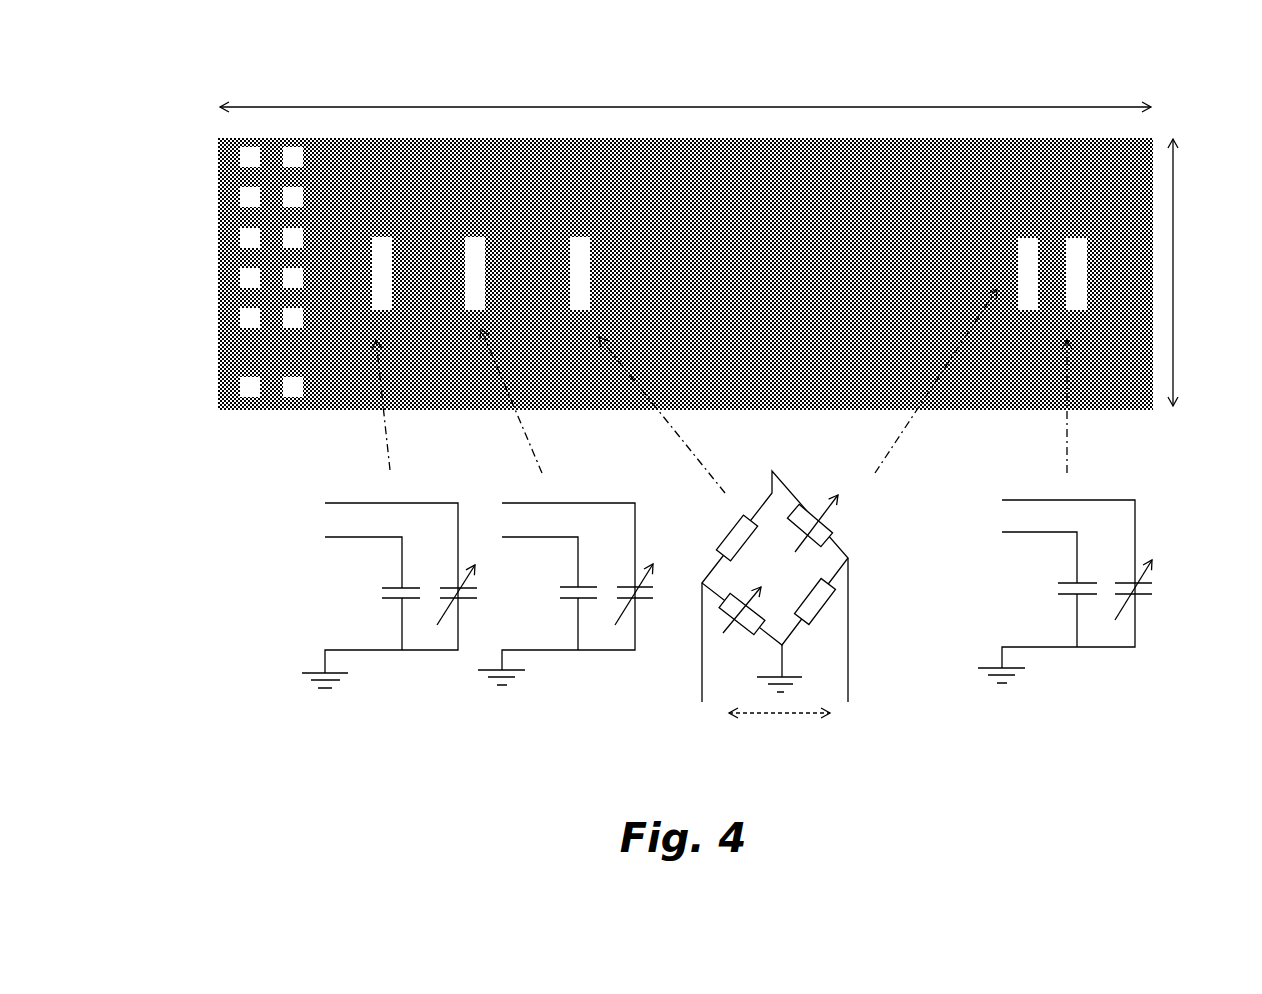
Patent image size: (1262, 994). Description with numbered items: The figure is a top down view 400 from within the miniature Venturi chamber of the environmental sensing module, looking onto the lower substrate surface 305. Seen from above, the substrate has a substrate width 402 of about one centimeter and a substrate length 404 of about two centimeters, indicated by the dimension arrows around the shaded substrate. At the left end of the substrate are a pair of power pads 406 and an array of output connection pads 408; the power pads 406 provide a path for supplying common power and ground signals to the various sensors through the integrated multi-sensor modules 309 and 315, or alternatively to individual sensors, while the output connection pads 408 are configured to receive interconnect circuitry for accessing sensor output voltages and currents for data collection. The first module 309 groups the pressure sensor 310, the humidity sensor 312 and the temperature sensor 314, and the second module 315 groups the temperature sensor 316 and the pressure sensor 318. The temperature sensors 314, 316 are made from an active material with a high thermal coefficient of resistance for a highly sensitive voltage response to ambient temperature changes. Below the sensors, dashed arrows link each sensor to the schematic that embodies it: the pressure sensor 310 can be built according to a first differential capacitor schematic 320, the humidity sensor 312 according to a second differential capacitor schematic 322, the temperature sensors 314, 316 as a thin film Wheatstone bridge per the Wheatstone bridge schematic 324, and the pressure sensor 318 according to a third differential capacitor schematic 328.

The top down view 400 is at (884, 41).
The substrate width 402 is at (1173, 273).
The substrate length 404 is at (848, 107).
The lower substrate surface 305 is at (962, 202).
The integrated multi-sensor module 309 is at (508, 232).
The pressure sensor 310 is at (392, 288).
The humidity sensor 312 is at (485, 288).
The temperature sensor 314 is at (612, 273).
The integrated multi-sensor module 315 is at (1057, 233).
The temperature sensor 316 is at (1018, 278).
The pressure sensor 318 is at (1107, 270).
The output connection pads 408 is at (210, 140).
The power pads 406 is at (210, 365).
The first differential capacitor schematic 320 is at (287, 626).
The second differential capacitor schematic 322 is at (501, 704).
The Wheatstone bridge schematic 324 is at (878, 671).
The third differential capacitor schematic 328 is at (1004, 708).